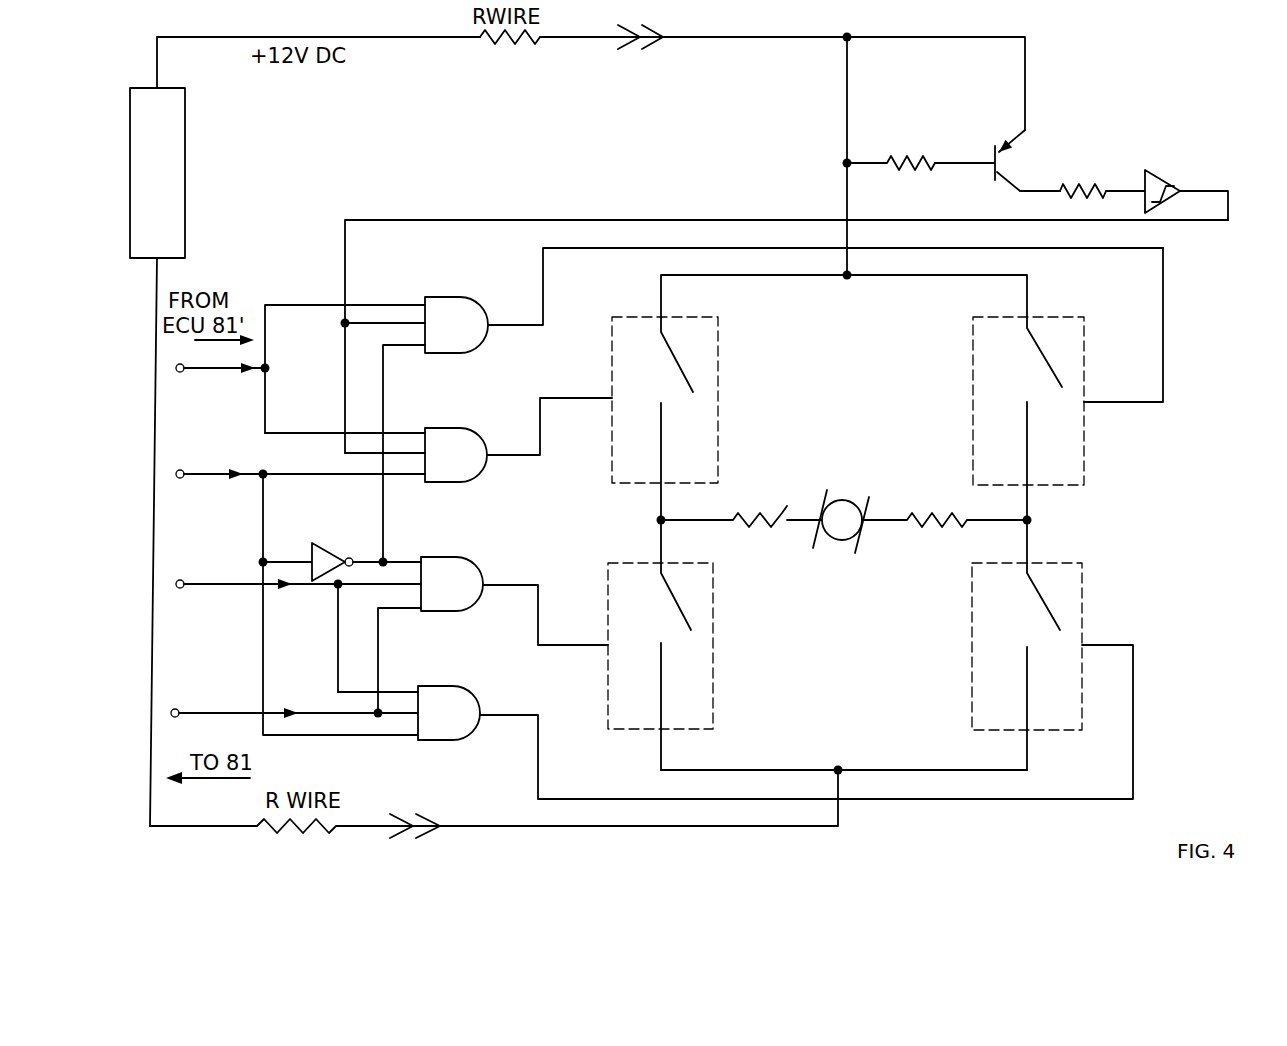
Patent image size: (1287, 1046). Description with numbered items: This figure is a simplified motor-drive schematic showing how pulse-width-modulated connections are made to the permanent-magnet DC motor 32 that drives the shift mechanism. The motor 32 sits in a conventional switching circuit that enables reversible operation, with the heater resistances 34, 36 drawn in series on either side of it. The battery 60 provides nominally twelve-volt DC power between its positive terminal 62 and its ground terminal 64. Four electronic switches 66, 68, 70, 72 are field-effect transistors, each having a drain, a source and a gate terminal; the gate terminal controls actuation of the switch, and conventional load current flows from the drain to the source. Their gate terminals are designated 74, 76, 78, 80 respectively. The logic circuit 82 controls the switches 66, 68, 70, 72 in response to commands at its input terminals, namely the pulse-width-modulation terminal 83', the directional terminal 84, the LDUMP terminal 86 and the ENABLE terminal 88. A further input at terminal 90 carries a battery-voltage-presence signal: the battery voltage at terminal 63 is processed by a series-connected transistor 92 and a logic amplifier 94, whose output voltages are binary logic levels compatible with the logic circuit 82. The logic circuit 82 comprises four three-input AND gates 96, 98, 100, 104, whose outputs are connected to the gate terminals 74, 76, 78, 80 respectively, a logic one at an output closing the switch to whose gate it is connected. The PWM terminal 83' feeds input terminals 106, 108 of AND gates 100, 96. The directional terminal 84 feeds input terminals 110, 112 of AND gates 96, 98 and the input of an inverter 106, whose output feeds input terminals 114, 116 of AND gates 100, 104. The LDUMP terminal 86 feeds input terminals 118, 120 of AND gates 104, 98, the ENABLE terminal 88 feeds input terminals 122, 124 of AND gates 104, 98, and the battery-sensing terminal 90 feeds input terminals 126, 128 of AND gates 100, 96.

The motor 32 is at (842, 500).
The first heater resistance RH 34 is at (798, 515).
The second heater resistance RH 36 is at (890, 520).
The battery 60 is at (185, 147).
The positive terminal 62 is at (159, 88).
The terminal 63 is at (847, 40).
The ground terminal 64 is at (157, 262).
The electronic switch 66 is at (680, 370).
The electronic switch 68 is at (1038, 602).
The electronic switch 70 is at (1040, 352).
The electronic switch 72 is at (676, 606).
The gate terminal 74 is at (612, 402).
The gate terminal 76 is at (1083, 648).
The gate terminal 78 is at (1088, 405).
The gate terminal 80 is at (606, 650).
The logic circuit 82 is at (411, 283).
The pulse-width-modulation terminal 83' is at (223, 383).
The directional terminal 84 is at (184, 480).
The LDUMP terminal 86 is at (184, 588).
The ENABLE terminal 88 is at (180, 718).
The terminal 90 is at (345, 220).
The transistor 92 is at (1003, 178).
The logic amplifier 94 is at (1160, 170).
The AND gate 96 is at (455, 428).
The AND gate 98 is at (465, 686).
The AND gate 100 is at (458, 297).
The AND gate 104 is at (465, 557).
The inverter 106 is at (400, 305).
The input terminal 108 is at (330, 433).
The input terminal 110 is at (343, 474).
The input terminal 112 is at (395, 735).
The input terminal 114 is at (400, 355).
The input terminal 116 is at (416, 556).
The input terminal 118 is at (395, 608).
The input terminal 120 is at (393, 690).
The input terminal 122 is at (397, 615).
The input terminal 124 is at (395, 713).
The input terminal 126 is at (343, 328).
The input terminal 128 is at (343, 453).